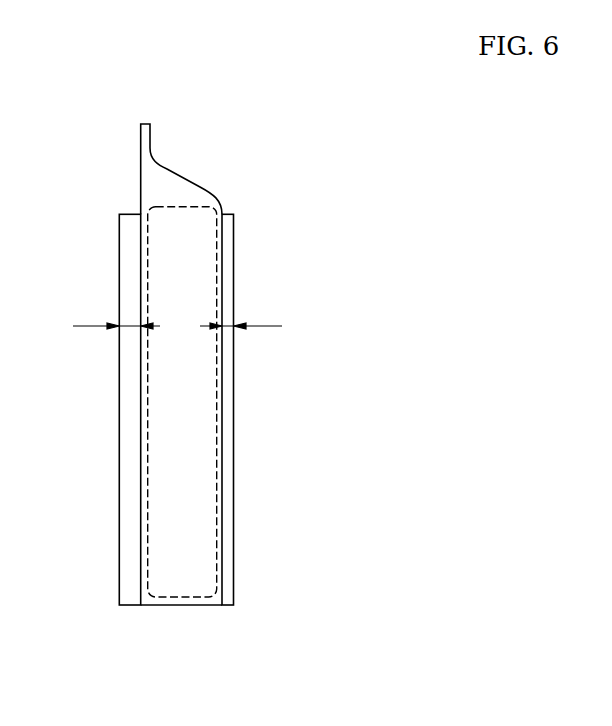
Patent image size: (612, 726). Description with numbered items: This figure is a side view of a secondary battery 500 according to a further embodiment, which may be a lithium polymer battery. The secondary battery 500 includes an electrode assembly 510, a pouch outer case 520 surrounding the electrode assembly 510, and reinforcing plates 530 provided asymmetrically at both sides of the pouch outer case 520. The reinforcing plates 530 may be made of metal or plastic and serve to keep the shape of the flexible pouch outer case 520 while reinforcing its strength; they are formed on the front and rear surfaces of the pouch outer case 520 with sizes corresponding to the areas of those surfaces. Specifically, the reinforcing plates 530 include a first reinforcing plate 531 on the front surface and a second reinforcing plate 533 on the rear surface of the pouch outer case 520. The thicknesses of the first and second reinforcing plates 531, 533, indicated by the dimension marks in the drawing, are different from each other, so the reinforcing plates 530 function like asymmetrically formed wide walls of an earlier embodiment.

The secondary battery 500 is at (61, 120).
The electrode assembly 510 is at (218, 244).
The pouch outer case 520 is at (192, 183).
The reinforcing plate 530 is at (177, 458).
The first reinforcing plate 531 is at (132, 605).
The second reinforcing plate 533 is at (225, 440).